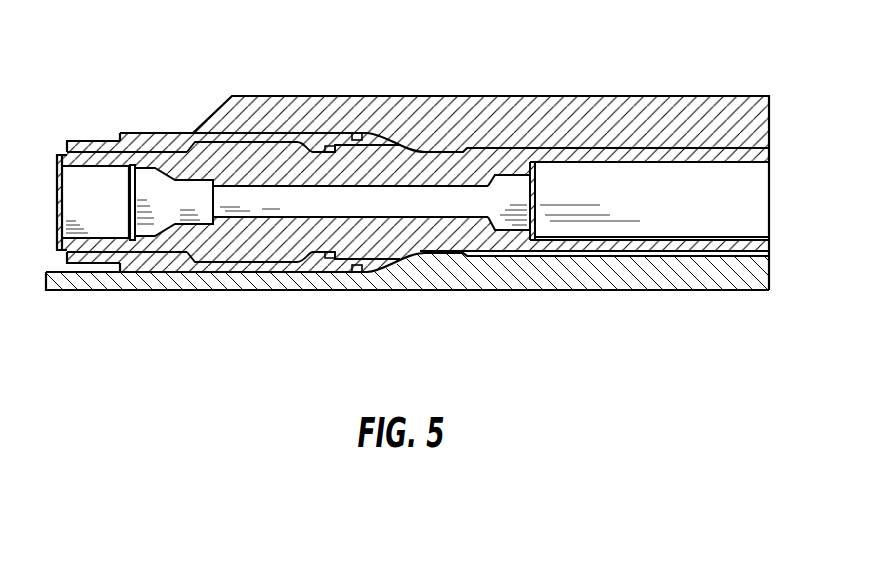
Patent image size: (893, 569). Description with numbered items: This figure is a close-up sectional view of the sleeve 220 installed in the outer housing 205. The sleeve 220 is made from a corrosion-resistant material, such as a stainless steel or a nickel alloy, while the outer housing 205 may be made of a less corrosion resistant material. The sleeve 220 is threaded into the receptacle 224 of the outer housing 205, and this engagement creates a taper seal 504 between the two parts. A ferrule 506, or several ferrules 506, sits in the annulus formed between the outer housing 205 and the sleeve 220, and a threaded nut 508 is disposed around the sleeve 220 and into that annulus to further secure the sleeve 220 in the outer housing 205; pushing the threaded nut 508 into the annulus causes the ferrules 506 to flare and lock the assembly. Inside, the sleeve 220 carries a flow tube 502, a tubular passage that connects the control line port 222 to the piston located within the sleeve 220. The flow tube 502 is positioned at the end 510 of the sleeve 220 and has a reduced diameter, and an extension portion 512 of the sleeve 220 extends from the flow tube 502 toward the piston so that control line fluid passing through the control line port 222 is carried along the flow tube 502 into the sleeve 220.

The outer housing 205 is at (302, 96).
The sleeve 220 is at (262, 167).
The control line port 222 is at (97, 222).
The receptacle 224 is at (717, 254).
The flow tube 502 is at (430, 215).
The taper seal 504 is at (398, 142).
The ferrule 506 is at (356, 132).
The threaded nut 508 is at (174, 132).
The end 510 is at (212, 240).
The extension portion 512 is at (518, 175).